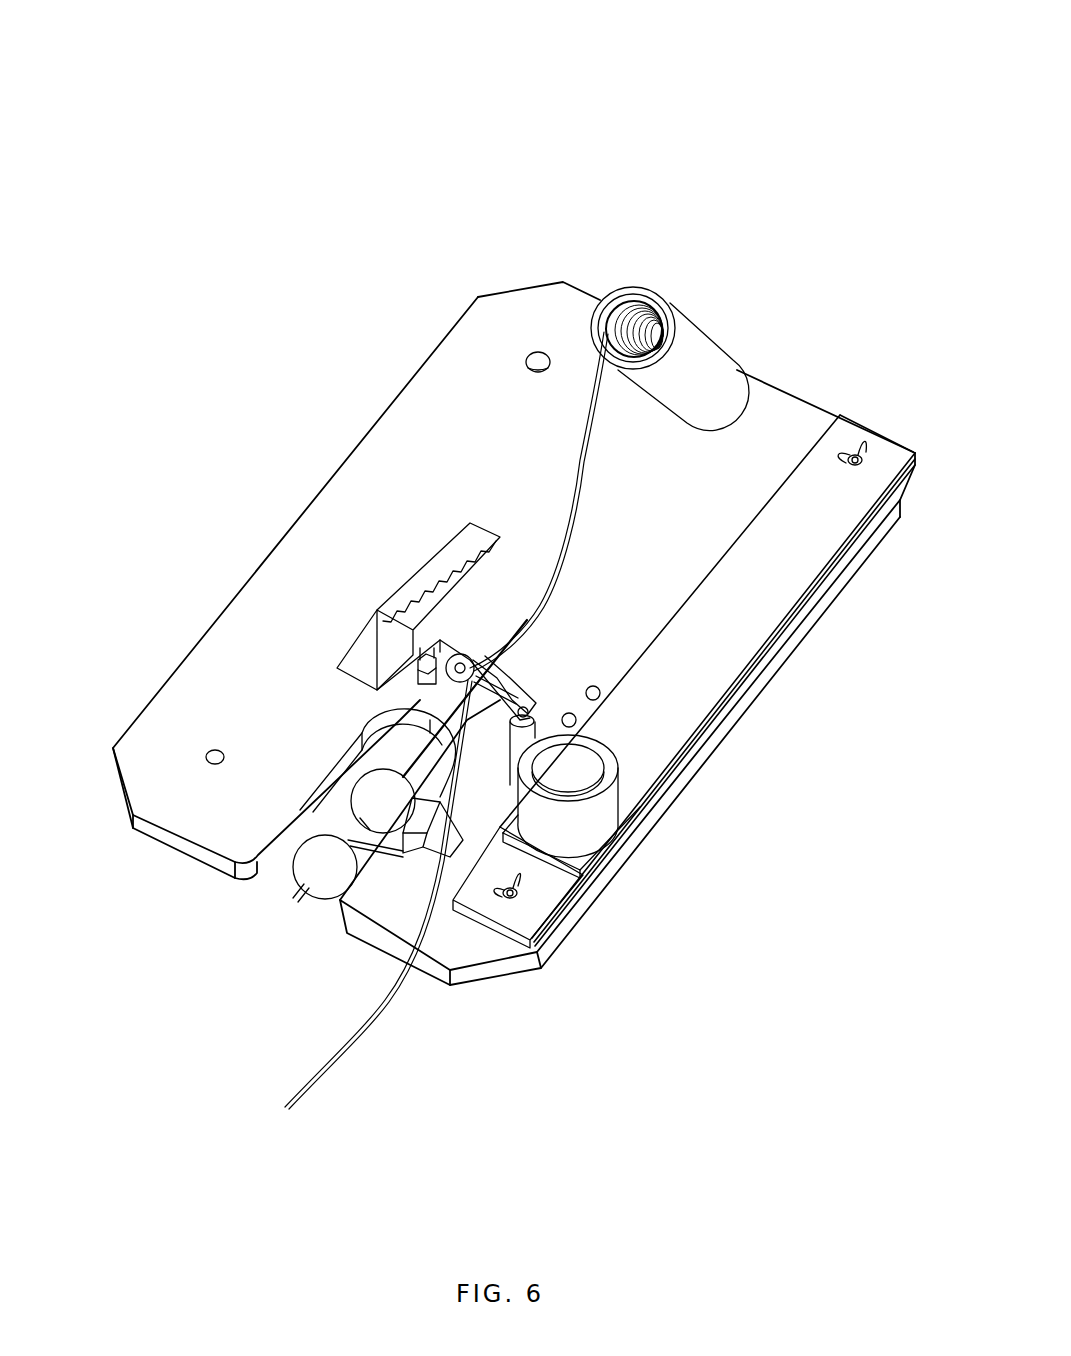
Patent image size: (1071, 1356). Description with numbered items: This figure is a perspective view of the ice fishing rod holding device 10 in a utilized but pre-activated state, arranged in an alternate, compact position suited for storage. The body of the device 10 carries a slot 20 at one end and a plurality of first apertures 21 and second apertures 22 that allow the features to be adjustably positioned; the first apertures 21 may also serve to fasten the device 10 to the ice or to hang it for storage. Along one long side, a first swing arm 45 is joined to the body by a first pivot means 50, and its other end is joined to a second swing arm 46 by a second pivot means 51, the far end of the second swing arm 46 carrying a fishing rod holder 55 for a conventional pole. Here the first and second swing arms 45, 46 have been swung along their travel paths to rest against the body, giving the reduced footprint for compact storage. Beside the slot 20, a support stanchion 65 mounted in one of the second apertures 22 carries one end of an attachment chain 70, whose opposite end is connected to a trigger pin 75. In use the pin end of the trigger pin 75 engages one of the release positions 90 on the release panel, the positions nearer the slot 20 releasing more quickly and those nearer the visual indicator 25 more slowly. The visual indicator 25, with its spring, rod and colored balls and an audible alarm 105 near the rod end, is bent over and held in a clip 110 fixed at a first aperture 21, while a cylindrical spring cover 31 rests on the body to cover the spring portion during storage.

The ice fishing rod holding device 10 is at (108, 175).
The slot 20 is at (290, 868).
The first apertures 21 is at (537, 353).
The second apertures 22 is at (576, 722).
The visual indicator 25 is at (567, 360).
The spring cover 31 is at (720, 380).
The first swing arm 45 is at (540, 895).
The second swing arm 46 is at (795, 550).
The first pivot means 50 is at (515, 902).
The second pivot means 51 is at (865, 463).
The fishing rod holder 55 is at (583, 822).
The support stanchion 65 is at (580, 727).
The attachment chain 70 is at (583, 732).
The trigger pin 75 is at (430, 650).
The release positions 90 is at (415, 612).
The audible alarm 105 is at (578, 872).
The clip 110 is at (420, 687).